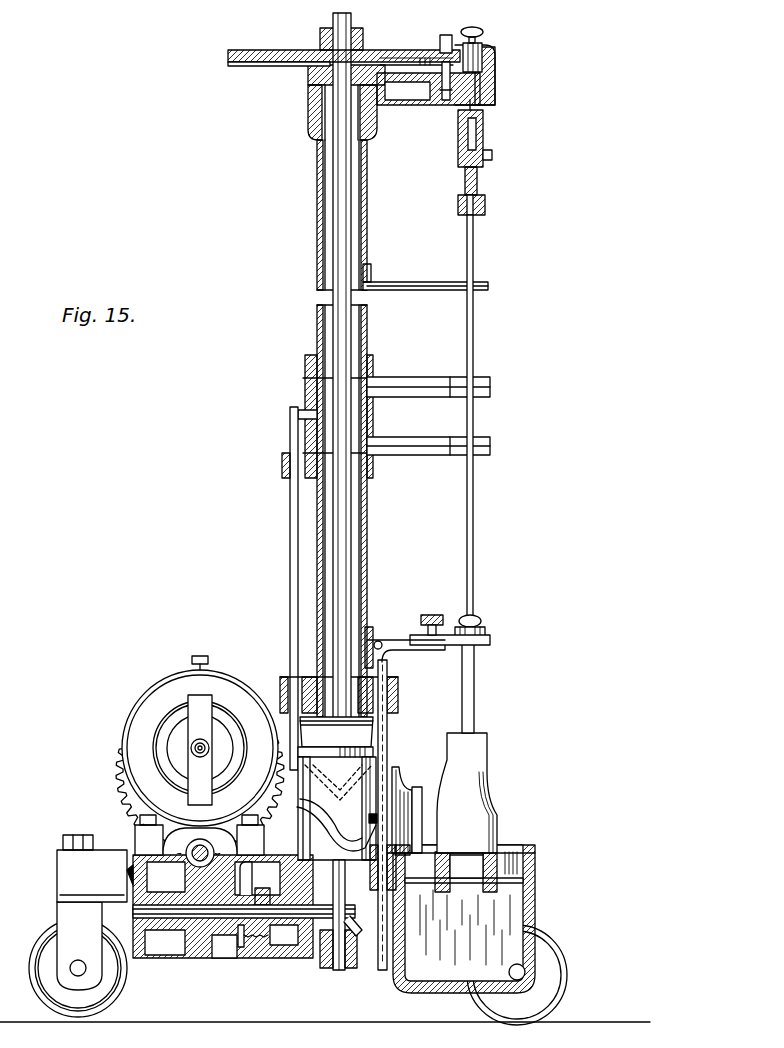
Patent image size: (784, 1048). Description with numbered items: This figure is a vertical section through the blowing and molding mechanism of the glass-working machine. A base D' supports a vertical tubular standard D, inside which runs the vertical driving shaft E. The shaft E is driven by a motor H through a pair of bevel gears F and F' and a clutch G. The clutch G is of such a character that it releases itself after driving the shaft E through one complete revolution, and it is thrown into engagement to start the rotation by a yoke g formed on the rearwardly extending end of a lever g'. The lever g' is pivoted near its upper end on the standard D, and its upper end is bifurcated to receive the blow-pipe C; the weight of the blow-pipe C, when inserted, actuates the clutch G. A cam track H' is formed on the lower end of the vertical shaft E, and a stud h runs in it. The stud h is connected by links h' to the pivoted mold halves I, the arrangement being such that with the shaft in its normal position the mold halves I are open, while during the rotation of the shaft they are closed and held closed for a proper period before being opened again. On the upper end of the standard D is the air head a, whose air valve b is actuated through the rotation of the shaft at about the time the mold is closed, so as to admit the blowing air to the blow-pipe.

The air head a is at (483, 122).
The air valve b is at (445, 103).
The blow-pipe C is at (473, 510).
The vertical tubular standard D is at (386, 399).
The vertical driving shaft E is at (337, 528).
The lever g' is at (397, 690).
The motor H is at (188, 741).
The stud h is at (447, 790).
The cam track H' is at (413, 808).
The links h' is at (470, 810).
The mold halves I is at (482, 837).
The clutch G is at (230, 928).
The yoke g is at (246, 964).
The base D' is at (244, 906).
The bevel gear F is at (399, 805).
The bevel gear F' is at (331, 931).